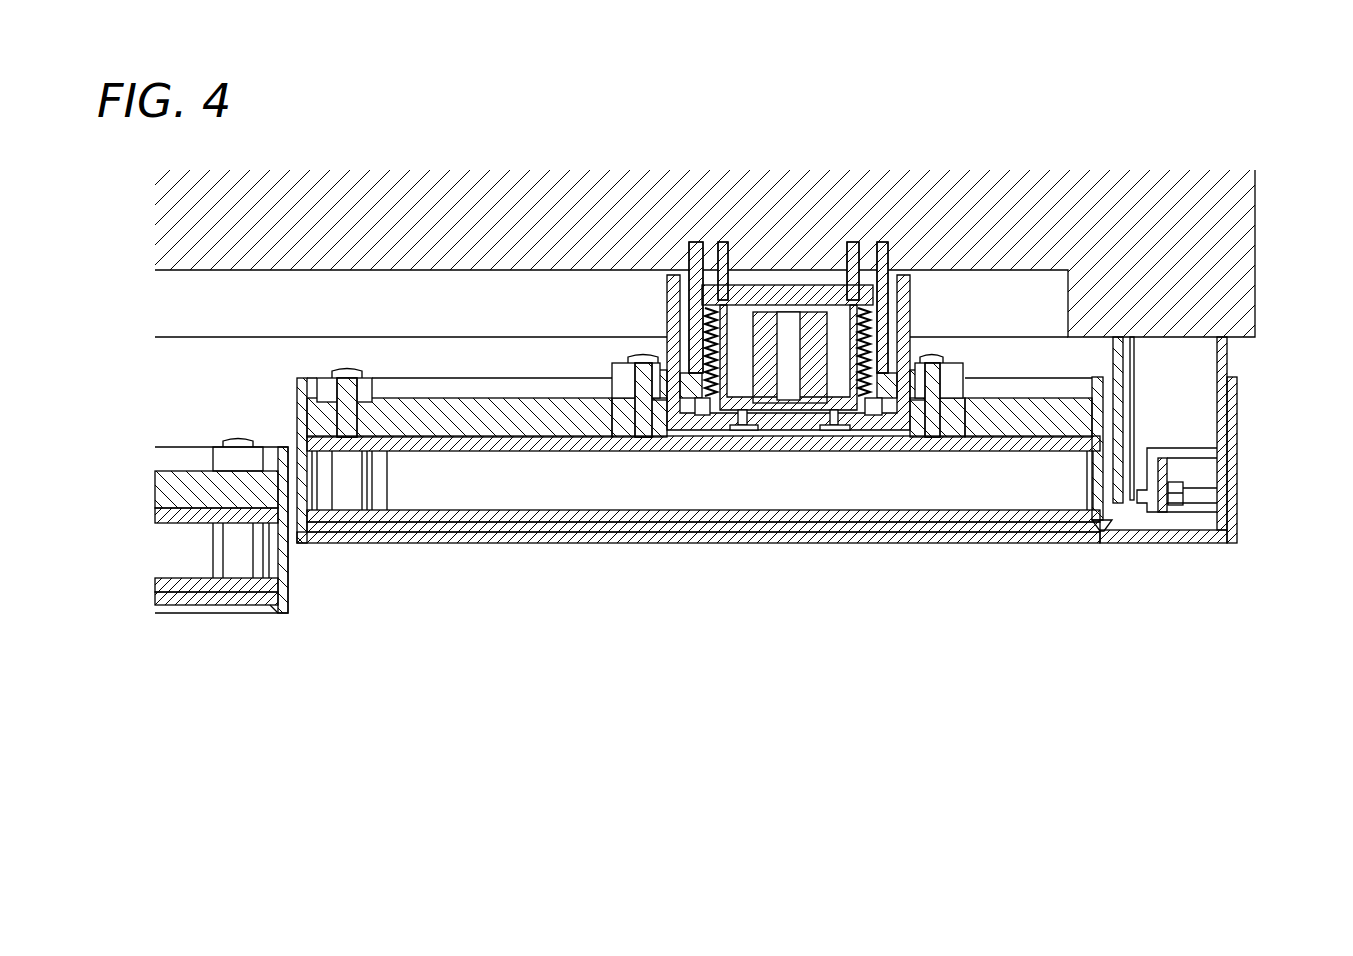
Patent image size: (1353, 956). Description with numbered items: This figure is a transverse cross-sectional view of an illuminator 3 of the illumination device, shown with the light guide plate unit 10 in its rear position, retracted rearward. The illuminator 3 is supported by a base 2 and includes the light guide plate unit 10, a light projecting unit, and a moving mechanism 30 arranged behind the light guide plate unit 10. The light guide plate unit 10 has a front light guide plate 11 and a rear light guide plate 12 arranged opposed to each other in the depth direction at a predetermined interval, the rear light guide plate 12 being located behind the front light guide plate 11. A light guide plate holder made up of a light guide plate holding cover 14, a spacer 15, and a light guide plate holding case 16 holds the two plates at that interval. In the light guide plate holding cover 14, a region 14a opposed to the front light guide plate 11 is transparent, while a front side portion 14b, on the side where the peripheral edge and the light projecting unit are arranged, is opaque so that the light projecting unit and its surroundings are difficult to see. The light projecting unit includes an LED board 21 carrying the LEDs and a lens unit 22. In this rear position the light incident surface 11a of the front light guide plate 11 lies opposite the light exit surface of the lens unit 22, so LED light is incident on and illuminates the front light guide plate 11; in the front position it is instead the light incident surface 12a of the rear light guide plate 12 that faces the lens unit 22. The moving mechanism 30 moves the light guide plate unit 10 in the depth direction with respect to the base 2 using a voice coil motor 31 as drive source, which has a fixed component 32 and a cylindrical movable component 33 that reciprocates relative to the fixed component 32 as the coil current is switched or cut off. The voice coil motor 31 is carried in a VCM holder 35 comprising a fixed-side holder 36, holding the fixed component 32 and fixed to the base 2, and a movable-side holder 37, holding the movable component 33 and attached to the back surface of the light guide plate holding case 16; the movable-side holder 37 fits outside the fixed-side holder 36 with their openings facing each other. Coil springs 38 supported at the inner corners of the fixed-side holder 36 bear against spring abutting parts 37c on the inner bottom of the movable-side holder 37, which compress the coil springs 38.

The base 2 is at (395, 178).
The illuminator 3 is at (802, 384).
The light guide plate unit 10 is at (600, 542).
The front light guide plate 11 is at (1027, 522).
The light incident surface 11a is at (1101, 531).
The rear light guide plate 12 is at (942, 440).
The light incident surface 12a is at (1117, 445).
The light guide plate holding cover 14 is at (745, 543).
The region 14a is at (805, 532).
The front side portion 14b is at (1213, 543).
The spacer 15 is at (345, 490).
The light guide plate holding case 16 is at (412, 425).
The LED board 21 is at (1172, 493).
The lens unit 22 is at (1145, 543).
The moving mechanism 30 is at (912, 306).
The voice coil motor 31 is at (850, 253).
The fixed component 32 is at (853, 285).
The movable component 33 is at (810, 362).
The VCM holder 35 is at (738, 251).
The fixed-side holder 36 is at (783, 280).
The movable-side holder 37 is at (702, 290).
The spring abutting parts 37c is at (700, 416).
The coil springs 38 is at (745, 400).